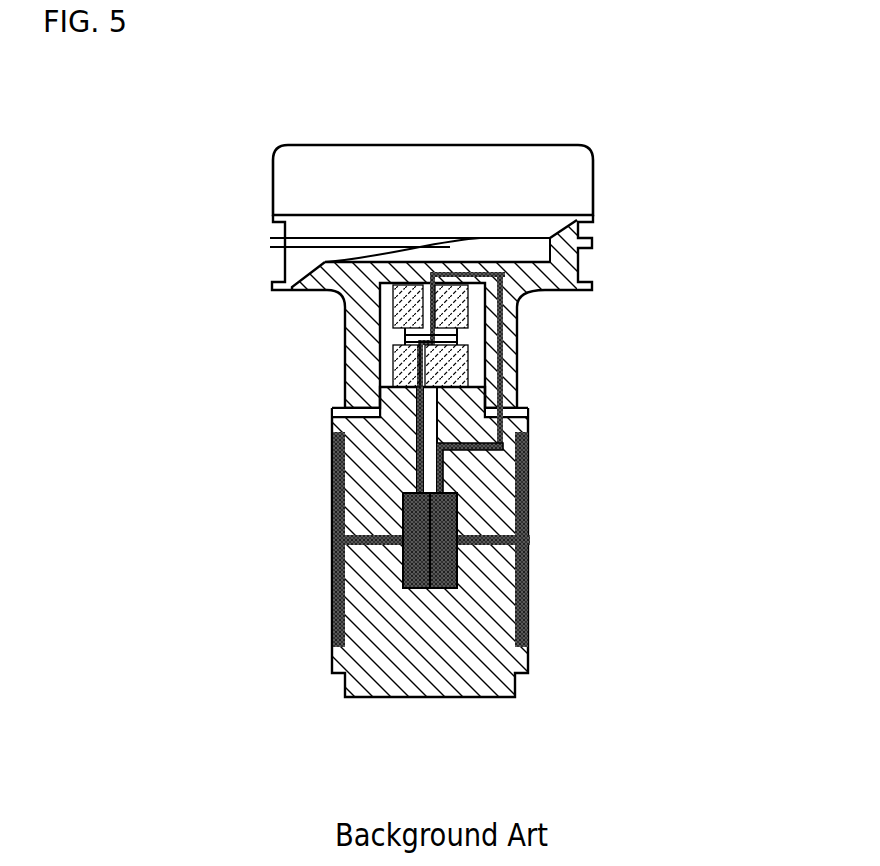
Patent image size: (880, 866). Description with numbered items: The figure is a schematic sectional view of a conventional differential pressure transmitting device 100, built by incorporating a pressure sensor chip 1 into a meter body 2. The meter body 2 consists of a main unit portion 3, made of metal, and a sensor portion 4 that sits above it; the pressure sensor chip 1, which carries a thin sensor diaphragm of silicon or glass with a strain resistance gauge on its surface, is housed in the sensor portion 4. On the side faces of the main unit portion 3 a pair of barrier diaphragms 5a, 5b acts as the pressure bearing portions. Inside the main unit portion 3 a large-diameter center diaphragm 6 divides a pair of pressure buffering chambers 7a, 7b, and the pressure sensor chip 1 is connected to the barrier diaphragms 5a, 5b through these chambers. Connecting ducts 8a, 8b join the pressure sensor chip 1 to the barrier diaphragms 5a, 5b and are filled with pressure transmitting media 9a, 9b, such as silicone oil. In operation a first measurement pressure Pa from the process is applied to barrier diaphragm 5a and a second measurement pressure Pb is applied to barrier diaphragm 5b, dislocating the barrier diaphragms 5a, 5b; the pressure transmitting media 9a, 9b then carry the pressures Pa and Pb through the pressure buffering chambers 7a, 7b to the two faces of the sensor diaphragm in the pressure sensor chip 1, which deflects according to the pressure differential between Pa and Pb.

The differential pressure transmitting device 100 is at (439, 398).
The pressure sensor chip 1 is at (460, 332).
The meter body 2 is at (577, 270).
The main unit portion 3 is at (478, 664).
The sensor portion 4 is at (358, 323).
The barrier diaphragm 5a is at (330, 480).
The barrier diaphragm 5b is at (533, 472).
The center diaphragm 6 is at (435, 550).
The pressure buffering chamber 7a is at (413, 565).
The pressure buffering chamber 7b is at (460, 577).
The connecting duct 8a is at (333, 417).
The connecting duct 8b is at (530, 415).
The pressure transmitting medium 9a is at (418, 372).
The pressure transmitting medium 9b is at (518, 363).
The first measurement pressure Pa is at (322, 541).
The second measurement pressure Pb is at (540, 541).